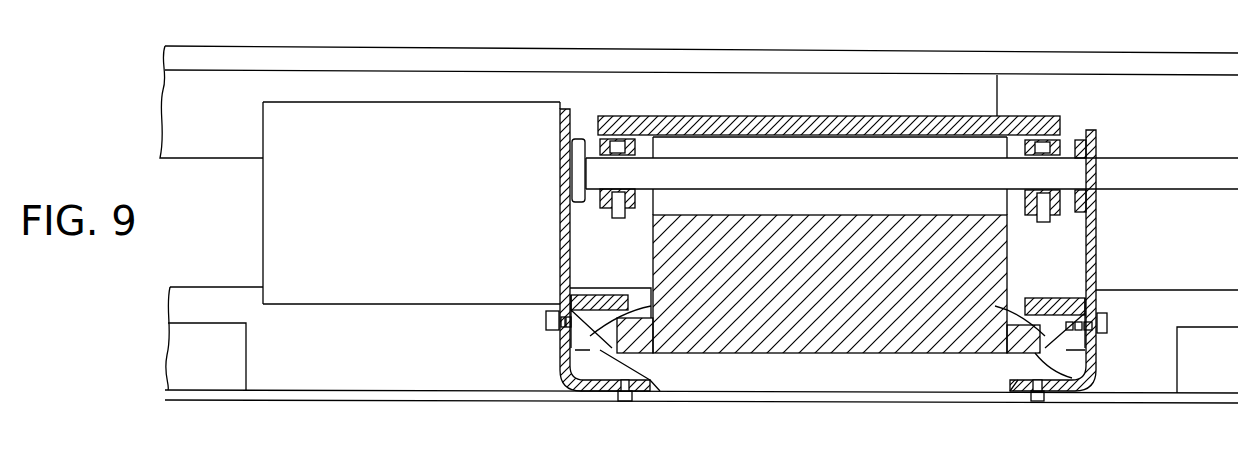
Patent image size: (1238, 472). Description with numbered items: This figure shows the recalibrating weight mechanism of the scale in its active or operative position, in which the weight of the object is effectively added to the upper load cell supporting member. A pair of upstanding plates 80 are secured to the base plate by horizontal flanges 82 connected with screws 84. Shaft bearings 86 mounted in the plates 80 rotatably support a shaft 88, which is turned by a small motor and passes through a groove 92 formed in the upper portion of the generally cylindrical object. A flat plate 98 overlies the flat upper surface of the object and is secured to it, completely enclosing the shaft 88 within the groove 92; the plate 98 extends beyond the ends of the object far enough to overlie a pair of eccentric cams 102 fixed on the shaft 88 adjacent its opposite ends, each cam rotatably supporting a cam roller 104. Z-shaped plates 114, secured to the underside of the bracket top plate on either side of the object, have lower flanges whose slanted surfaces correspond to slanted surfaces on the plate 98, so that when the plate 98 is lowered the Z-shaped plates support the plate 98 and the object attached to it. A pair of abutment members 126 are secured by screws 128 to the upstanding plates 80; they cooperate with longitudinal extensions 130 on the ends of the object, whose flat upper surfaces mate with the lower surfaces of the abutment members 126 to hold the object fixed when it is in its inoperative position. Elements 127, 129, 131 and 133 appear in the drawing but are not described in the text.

The upstanding plates 80 is at (567, 268).
The horizontal flanges 82 is at (640, 401).
The screws 84 is at (632, 382).
The shaft bearings 86 is at (578, 139).
The shaft 88 is at (888, 188).
The groove 92 is at (860, 296).
The flat plate 98 is at (1058, 117).
The eccentric cams 102 is at (600, 205).
The cam roller 104 is at (617, 218).
The Z-shaped plates 114 is at (997, 92).
The abutment members 126 is at (574, 340).
The lower block portion 127 is at (638, 330).
The screws 128 is at (546, 320).
The pad 129 is at (578, 348).
The longitudinal extensions 130 is at (625, 350).
The retainer plate 131 is at (633, 310).
The curved leaf 133 is at (646, 300).